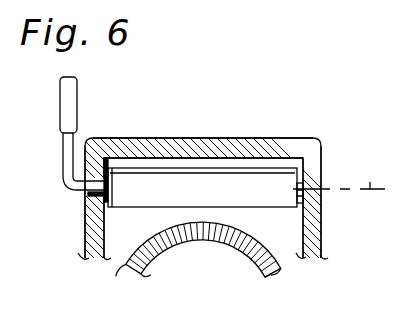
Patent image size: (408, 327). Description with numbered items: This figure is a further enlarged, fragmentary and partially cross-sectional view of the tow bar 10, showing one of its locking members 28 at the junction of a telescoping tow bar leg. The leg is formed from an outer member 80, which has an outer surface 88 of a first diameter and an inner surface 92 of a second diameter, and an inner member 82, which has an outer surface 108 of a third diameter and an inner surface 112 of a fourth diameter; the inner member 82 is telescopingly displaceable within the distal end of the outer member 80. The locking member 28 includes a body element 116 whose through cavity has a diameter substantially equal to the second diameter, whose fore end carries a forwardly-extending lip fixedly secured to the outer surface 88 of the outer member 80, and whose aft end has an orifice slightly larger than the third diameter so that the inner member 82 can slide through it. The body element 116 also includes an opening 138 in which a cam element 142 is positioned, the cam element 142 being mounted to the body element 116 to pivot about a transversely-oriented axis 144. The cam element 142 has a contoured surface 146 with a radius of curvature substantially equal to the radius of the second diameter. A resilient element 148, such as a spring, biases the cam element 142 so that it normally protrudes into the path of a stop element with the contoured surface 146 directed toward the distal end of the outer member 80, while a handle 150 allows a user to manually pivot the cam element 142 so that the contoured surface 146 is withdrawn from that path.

The tow bar 10 is at (203, 98).
The locking member 28 is at (334, 133).
The outer member 80 is at (87, 246).
The inner member 82 is at (146, 271).
The outer surface 88 is at (322, 247).
The inner surface 92 is at (298, 250).
The outer surface 108 is at (121, 264).
The inner surface 112 is at (170, 245).
The body element 116 is at (287, 139).
The opening 138 is at (303, 203).
The cam element 142 is at (268, 163).
The axis 144 is at (343, 173).
The contoured surface 146 is at (203, 192).
The resilient element 148 is at (106, 158).
The handle 150 is at (61, 95).